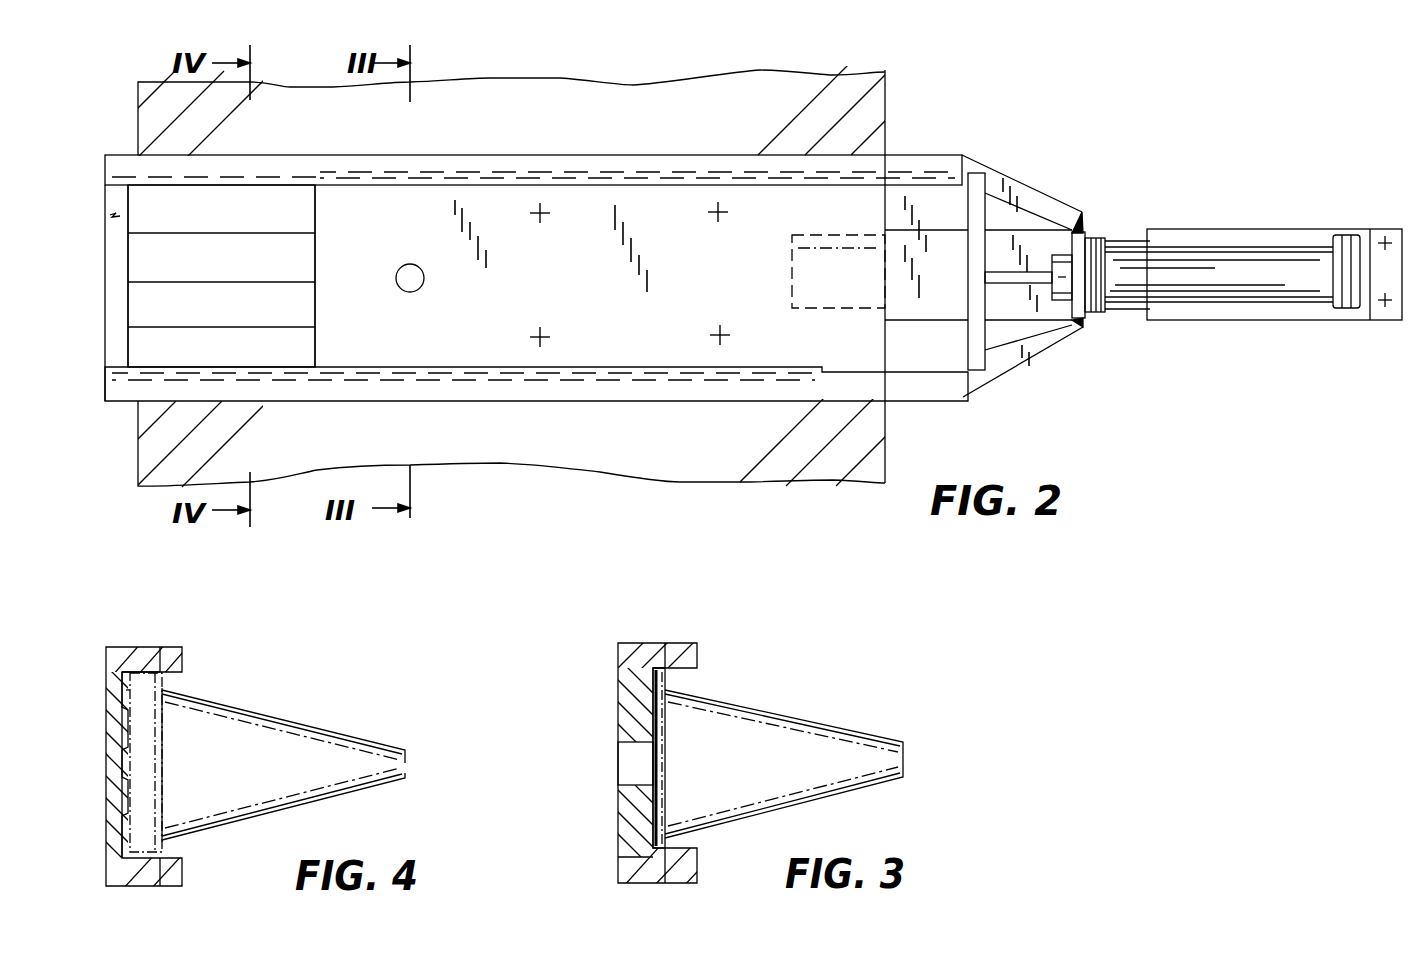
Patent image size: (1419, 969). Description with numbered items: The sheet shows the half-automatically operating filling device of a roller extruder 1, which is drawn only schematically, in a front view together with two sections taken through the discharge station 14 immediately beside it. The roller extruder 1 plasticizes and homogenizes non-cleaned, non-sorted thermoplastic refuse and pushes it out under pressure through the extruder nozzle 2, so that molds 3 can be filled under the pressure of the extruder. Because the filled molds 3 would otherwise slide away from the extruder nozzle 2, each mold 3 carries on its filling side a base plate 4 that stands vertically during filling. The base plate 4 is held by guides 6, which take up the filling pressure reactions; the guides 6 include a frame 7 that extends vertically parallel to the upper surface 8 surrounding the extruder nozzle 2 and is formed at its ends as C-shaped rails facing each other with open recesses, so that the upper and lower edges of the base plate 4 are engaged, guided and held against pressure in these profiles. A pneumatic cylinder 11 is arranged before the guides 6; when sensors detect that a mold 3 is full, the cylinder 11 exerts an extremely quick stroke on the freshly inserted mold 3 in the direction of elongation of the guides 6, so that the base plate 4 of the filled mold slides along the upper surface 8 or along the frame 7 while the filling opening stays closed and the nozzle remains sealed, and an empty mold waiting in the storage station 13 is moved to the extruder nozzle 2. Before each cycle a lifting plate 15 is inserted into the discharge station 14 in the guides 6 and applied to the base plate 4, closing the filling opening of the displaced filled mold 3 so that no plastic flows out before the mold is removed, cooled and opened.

In FIG. 2, the roller extruder 1 is at (560, 455).
In FIG. 2, the extruder nozzle 2 is at (415, 292).
In FIG. 4, the mold 3 is at (348, 745).
In FIG. 3, the mold 3 is at (810, 705).
In FIG. 4, the base plate 4 is at (157, 782).
In FIG. 3, the base plate 4 is at (666, 688).
In FIG. 2, the guides 6 is at (930, 157).
In FIG. 4, the guides 6 is at (178, 651).
In FIG. 3, the guides 6 is at (690, 648).
In FIG. 4, the frame 7 is at (106, 685).
In FIG. 3, the frame 7 is at (620, 703).
In FIG. 2, the upper surface 8 is at (736, 448).
In FIG. 3, the upper surface 8 is at (621, 728).
In FIG. 2, the pneumatic cylinder 11 is at (1182, 232).
In FIG. 2, the storage station 13 is at (645, 350).
In FIG. 2, the discharge station 14 is at (263, 360).
In FIG. 4, the lifting plate 15 is at (150, 733).